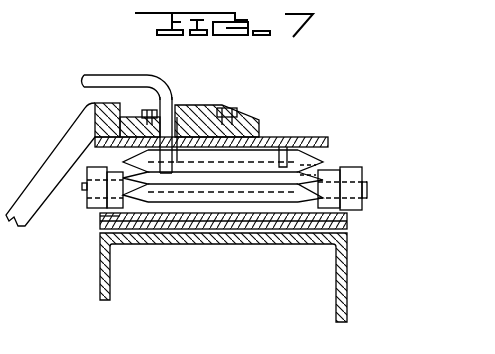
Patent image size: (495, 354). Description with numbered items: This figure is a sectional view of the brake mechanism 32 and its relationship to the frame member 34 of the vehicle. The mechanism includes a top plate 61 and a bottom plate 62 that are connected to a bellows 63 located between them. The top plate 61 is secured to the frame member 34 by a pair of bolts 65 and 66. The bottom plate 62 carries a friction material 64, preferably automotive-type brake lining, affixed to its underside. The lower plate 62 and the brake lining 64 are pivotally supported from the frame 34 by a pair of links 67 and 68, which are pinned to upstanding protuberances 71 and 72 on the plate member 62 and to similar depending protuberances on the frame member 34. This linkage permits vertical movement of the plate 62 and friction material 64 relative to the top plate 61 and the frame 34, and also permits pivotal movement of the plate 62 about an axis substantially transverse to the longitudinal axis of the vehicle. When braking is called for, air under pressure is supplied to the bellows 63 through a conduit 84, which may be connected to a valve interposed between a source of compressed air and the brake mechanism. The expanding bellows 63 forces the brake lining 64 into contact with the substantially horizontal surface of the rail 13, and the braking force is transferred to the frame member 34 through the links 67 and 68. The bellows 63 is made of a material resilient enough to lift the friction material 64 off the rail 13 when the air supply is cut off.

The rail 13 is at (384, 311).
The brake mechanism 32 is at (78, 207).
The frame member 34 is at (48, 160).
The top plate 61 is at (279, 145).
The bottom plate 62 is at (347, 225).
The bellows 63 is at (320, 162).
The friction material 64 is at (347, 245).
The bolt 65 is at (160, 96).
The bolt 66 is at (223, 108).
The link 67 is at (122, 163).
The link 68 is at (350, 170).
The upstanding protuberance 71 is at (102, 218).
The upstanding protuberance 72 is at (338, 203).
The conduit 84 is at (115, 77).